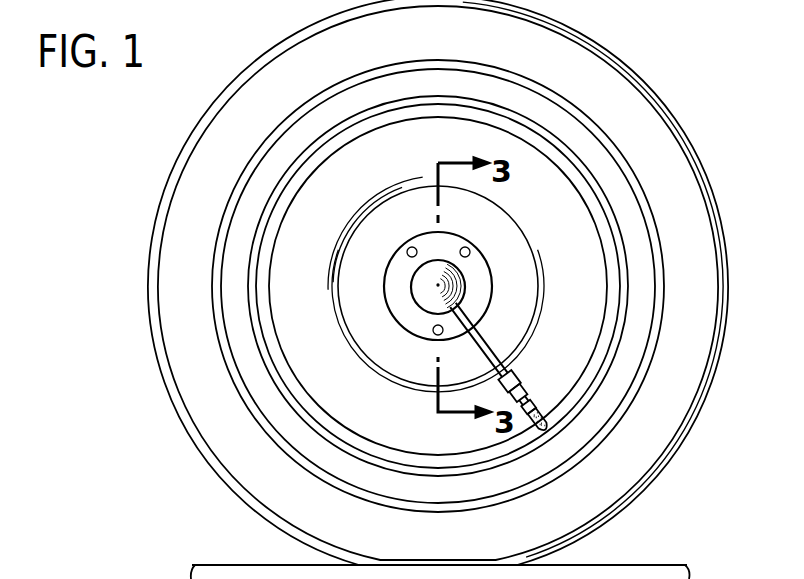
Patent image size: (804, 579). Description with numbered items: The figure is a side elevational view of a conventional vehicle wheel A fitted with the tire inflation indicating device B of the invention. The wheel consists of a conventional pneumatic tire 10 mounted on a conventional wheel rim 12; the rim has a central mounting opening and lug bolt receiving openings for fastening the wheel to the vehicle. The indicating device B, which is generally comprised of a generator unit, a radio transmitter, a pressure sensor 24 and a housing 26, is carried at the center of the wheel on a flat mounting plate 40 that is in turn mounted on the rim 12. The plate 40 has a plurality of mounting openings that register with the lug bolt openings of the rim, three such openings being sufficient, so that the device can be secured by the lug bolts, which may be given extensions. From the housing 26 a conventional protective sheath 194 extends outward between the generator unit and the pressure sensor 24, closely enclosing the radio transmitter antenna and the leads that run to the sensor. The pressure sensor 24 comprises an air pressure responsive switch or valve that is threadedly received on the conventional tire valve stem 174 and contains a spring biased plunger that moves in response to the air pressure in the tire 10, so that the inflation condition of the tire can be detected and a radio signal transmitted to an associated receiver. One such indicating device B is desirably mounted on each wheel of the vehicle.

The pneumatic tire 10 is at (630, 95).
The vehicle wheel A is at (645, 128).
The wheel rim 12 is at (310, 367).
The mounting plate 40 is at (518, 257).
The indicating device B is at (376, 248).
The housing 26 is at (432, 297).
The protective sheath 194 is at (455, 338).
The pressure sensor 24 is at (541, 372).
The tire valve stem 174 is at (553, 418).